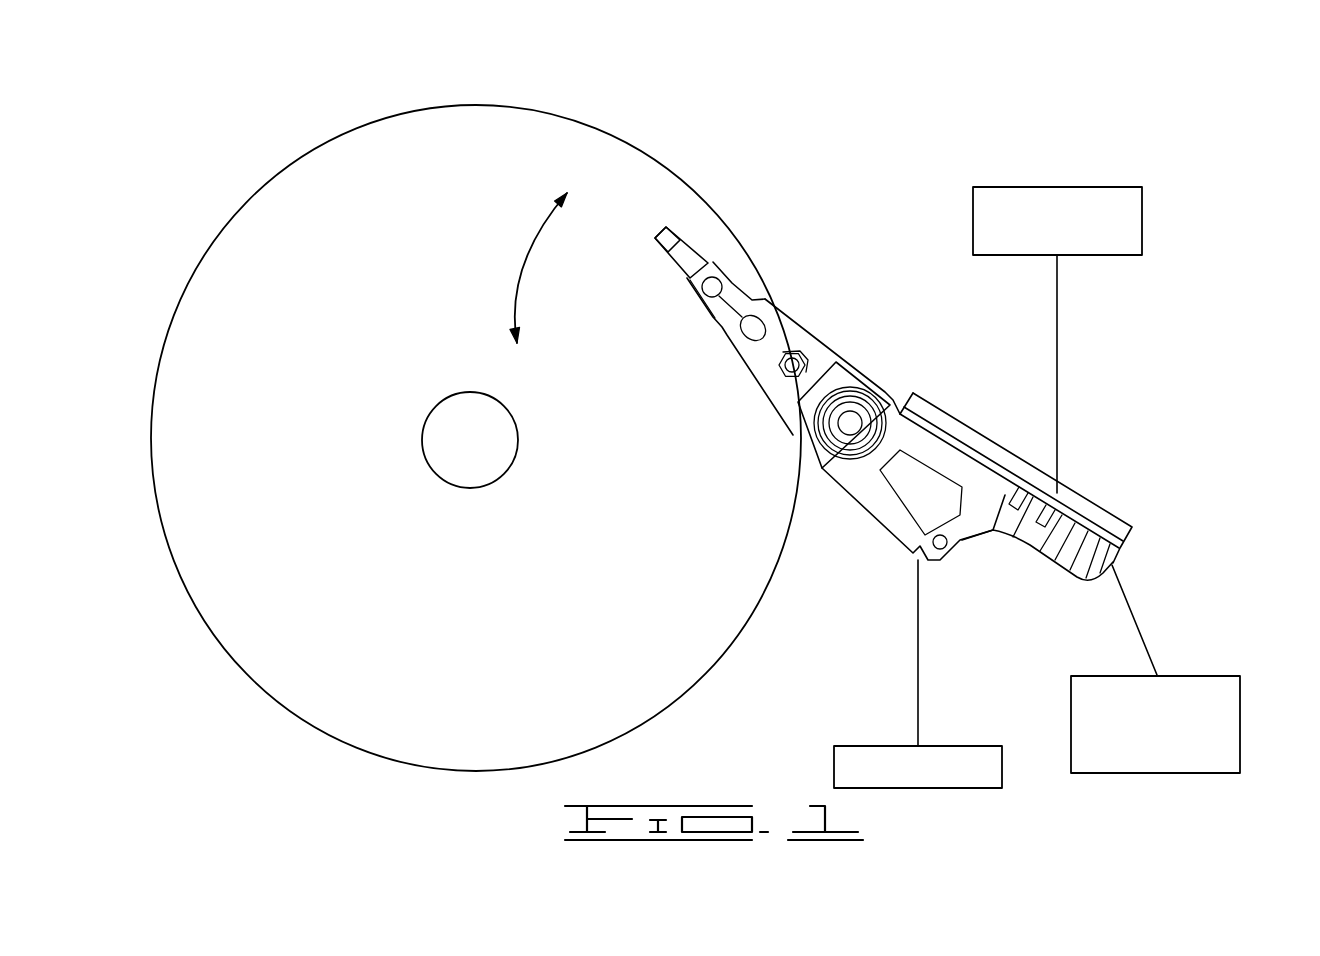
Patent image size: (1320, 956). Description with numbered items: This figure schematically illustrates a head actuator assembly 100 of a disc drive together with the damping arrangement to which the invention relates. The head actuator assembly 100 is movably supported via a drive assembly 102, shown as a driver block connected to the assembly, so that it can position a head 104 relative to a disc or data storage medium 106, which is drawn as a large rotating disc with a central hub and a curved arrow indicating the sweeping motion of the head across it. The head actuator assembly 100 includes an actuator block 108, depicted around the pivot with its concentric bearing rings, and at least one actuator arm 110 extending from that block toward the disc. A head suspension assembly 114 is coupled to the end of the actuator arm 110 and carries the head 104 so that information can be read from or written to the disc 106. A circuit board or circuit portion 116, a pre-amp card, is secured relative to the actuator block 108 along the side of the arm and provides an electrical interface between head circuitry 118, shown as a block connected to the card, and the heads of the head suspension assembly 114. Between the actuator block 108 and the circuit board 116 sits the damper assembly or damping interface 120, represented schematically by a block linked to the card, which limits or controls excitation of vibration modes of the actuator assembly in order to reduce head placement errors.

The head actuator assembly 100 is at (840, 265).
The drive assembly 102 is at (945, 747).
The head 104 is at (670, 228).
The disc 106 is at (545, 145).
The actuator block 108 is at (882, 397).
The actuator arm 110 is at (772, 372).
The head suspension assembly 114 is at (687, 264).
The circuit board 116 is at (1010, 463).
The circuitry 118 is at (1085, 188).
The damper assembly 120 is at (1182, 677).